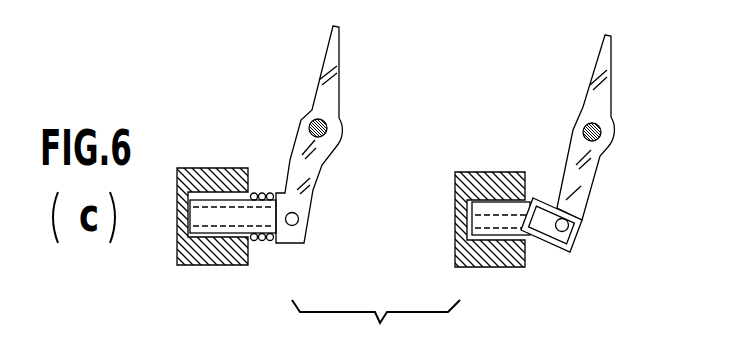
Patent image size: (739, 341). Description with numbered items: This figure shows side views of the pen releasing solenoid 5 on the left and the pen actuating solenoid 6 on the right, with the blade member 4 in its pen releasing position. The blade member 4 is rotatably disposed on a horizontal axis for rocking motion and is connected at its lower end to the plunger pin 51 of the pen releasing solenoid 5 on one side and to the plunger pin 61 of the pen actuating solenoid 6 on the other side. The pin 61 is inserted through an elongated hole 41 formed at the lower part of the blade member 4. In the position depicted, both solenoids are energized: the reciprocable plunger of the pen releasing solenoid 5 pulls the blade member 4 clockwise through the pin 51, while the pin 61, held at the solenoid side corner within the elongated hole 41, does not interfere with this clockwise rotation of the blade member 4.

The blade member 4 is at (341, 122).
The pen releasing solenoid 5 is at (212, 168).
The plunger pin 51 is at (291, 228).
The pen actuating solenoid 6 is at (493, 172).
The plunger pin 61 is at (569, 222).
The elongated hole 41 is at (547, 234).